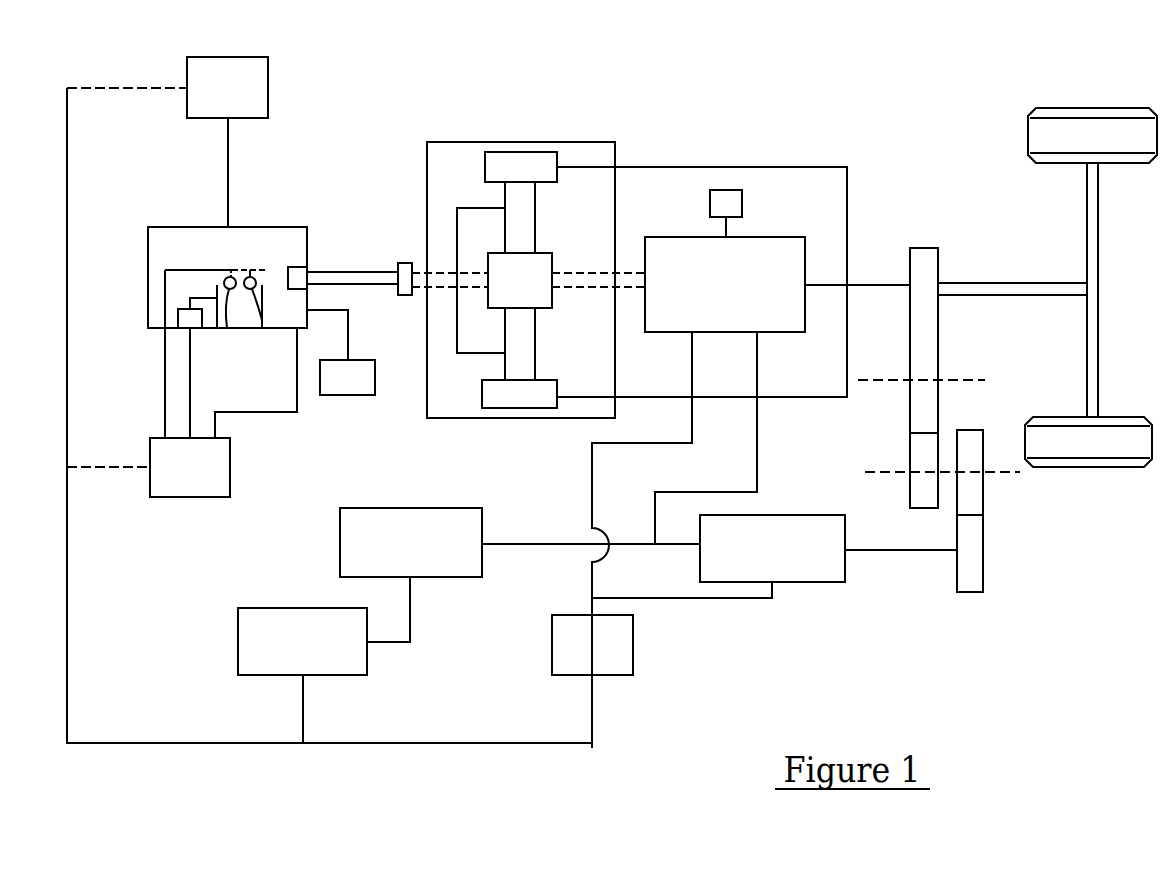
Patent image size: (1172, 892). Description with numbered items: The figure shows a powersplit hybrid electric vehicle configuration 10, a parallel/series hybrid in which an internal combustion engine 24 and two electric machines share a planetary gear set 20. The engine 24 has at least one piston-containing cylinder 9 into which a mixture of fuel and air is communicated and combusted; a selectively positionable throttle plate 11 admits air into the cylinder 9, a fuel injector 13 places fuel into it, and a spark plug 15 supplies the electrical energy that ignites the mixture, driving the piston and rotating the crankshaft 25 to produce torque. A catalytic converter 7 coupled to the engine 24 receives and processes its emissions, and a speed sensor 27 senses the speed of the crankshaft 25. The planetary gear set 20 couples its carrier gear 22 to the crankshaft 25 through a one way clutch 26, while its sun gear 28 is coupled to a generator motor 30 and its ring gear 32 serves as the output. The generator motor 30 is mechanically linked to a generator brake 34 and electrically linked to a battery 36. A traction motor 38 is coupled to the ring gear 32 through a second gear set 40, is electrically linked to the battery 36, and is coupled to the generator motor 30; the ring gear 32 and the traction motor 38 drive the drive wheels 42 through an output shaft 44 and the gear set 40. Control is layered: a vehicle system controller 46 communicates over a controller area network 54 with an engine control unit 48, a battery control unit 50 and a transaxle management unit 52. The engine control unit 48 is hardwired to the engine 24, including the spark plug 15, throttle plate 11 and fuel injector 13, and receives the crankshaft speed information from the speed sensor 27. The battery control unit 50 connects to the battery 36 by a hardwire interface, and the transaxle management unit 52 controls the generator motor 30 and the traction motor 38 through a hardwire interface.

The catalytic converter 7 is at (348, 395).
The cylinder 9 is at (245, 318).
The powersplit hybrid electric vehicle configuration 10 is at (839, 110).
The throttle plate 11 is at (178, 320).
The fuel injector 13 is at (250, 300).
The spark plug 15 is at (230, 328).
The planetary gear set 20 is at (588, 142).
The carrier gear 22 is at (520, 210).
The internal combustion engine 24 is at (182, 227).
The crankshaft 25 is at (335, 270).
The one way clutch 26 is at (405, 263).
The speed sensor 27 is at (298, 267).
The sun gear 28 is at (510, 296).
The generator motor 30 is at (783, 248).
The ring gear 32 is at (523, 152).
The generator brake 34 is at (710, 203).
The battery 36 is at (447, 577).
The traction motor 38 is at (810, 582).
The second gear set 40 is at (897, 260).
The drive wheels 42 is at (1097, 108).
The output shaft 44 is at (1037, 283).
The vehicle system controller 46 is at (268, 88).
The engine control unit 48 is at (230, 465).
The battery control unit 50 is at (348, 675).
The transaxle management unit 52 is at (613, 675).
The controller area network 54 is at (67, 618).